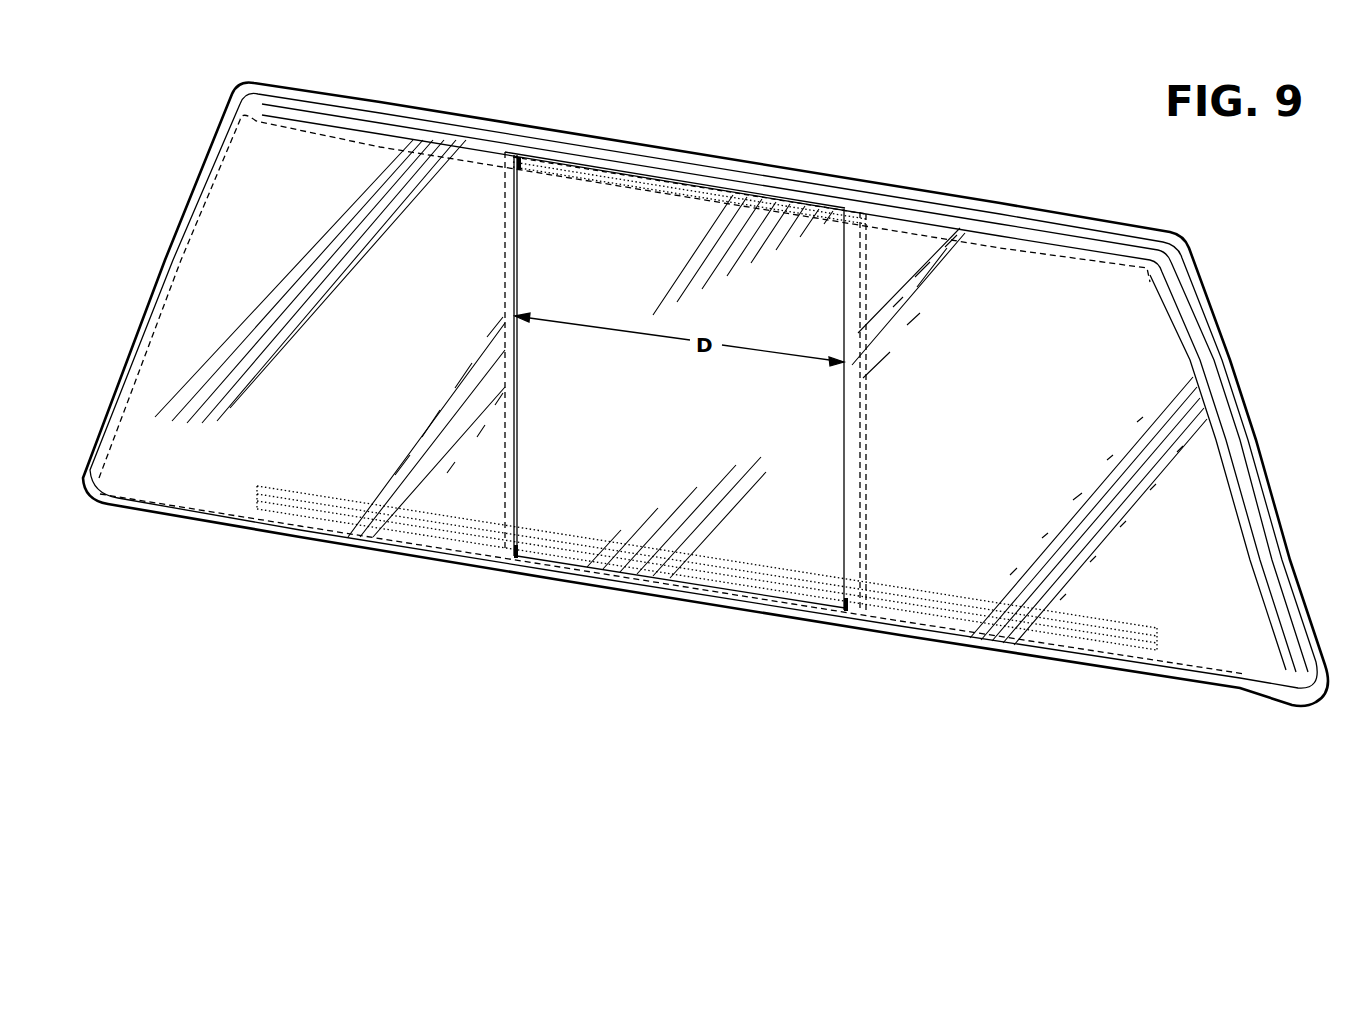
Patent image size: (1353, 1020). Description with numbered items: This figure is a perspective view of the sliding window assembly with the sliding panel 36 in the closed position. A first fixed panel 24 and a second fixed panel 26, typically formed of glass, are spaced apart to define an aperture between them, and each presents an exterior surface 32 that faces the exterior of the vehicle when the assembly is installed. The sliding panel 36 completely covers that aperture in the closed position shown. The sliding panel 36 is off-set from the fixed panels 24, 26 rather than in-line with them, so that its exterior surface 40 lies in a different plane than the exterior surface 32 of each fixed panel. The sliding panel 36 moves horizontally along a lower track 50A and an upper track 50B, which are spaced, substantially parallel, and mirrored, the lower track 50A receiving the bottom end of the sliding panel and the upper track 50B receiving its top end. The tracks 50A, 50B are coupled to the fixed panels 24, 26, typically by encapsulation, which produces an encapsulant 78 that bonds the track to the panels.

The first fixed panel 24 is at (257, 188).
The second fixed panel 26 is at (1120, 328).
The exterior surface 32 is at (375, 334).
The sliding panel 36 is at (630, 215).
The exterior surface 40 is at (696, 421).
The lower track 50A is at (450, 540).
The upper track 50B is at (907, 227).
The encapsulant 78 is at (1308, 665).